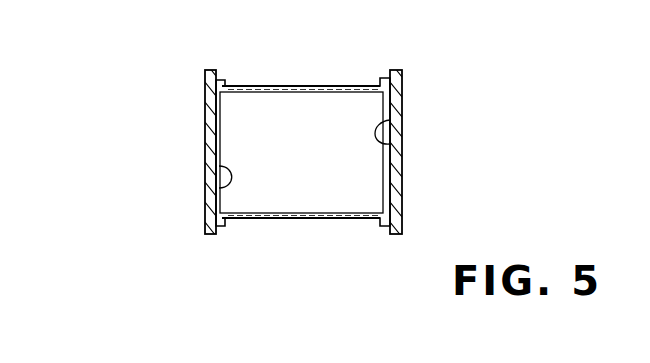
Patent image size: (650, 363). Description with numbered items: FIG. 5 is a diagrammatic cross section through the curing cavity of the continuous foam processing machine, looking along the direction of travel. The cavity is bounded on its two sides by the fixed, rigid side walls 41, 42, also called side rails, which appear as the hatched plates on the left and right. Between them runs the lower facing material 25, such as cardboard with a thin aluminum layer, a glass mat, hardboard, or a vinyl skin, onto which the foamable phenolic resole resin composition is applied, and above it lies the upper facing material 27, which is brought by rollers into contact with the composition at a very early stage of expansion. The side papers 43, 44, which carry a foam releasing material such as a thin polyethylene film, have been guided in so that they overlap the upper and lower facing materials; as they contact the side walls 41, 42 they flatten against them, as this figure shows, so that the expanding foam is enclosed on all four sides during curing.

The lower facing material 25 is at (305, 219).
The upper facing material 27 is at (299, 86).
The side wall 41 is at (210, 131).
The side wall 42 is at (398, 168).
The side paper 43 is at (219, 187).
The side paper 44 is at (390, 120).